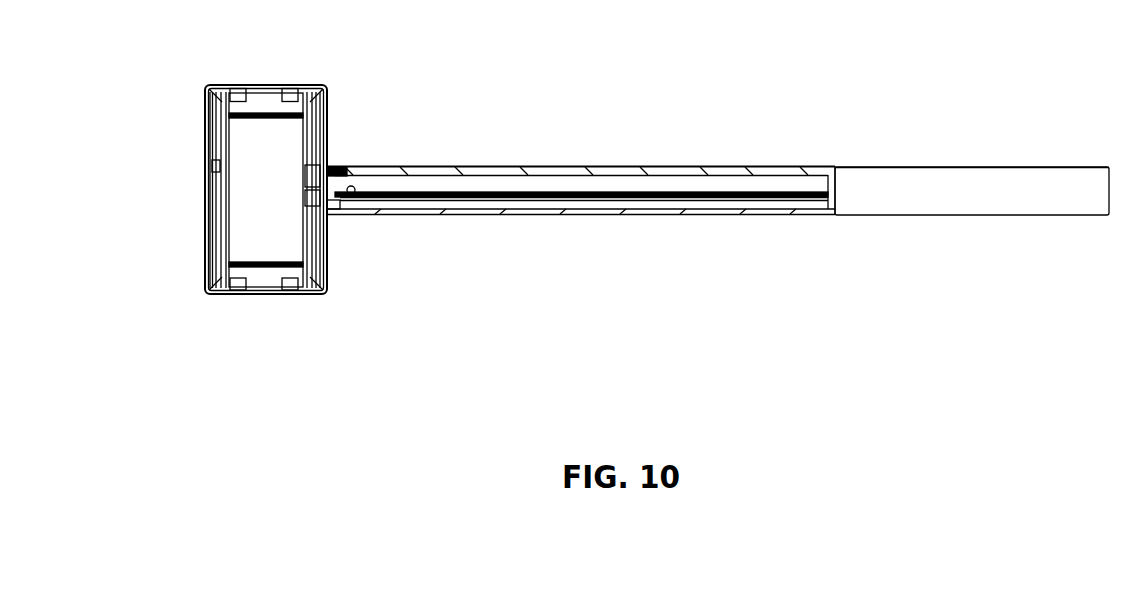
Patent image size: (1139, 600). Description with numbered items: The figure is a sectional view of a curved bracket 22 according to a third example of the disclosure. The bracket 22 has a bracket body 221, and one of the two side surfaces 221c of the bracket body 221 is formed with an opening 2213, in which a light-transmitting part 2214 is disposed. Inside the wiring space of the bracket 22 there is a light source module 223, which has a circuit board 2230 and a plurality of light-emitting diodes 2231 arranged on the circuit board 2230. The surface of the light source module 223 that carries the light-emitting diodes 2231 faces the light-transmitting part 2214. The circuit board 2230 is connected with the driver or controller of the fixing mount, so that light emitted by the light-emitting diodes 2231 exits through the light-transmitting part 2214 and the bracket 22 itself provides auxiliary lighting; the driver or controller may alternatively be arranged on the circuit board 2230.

The bracket 22 is at (688, 236).
The bracket body 221 is at (1007, 187).
The side surface 221c is at (913, 165).
The opening 2213 is at (302, 165).
The light-transmitting part 2214 is at (533, 167).
The light source module 223 is at (368, 198).
The circuit board 2230 is at (778, 197).
The light-emitting diodes 2231 is at (440, 193).